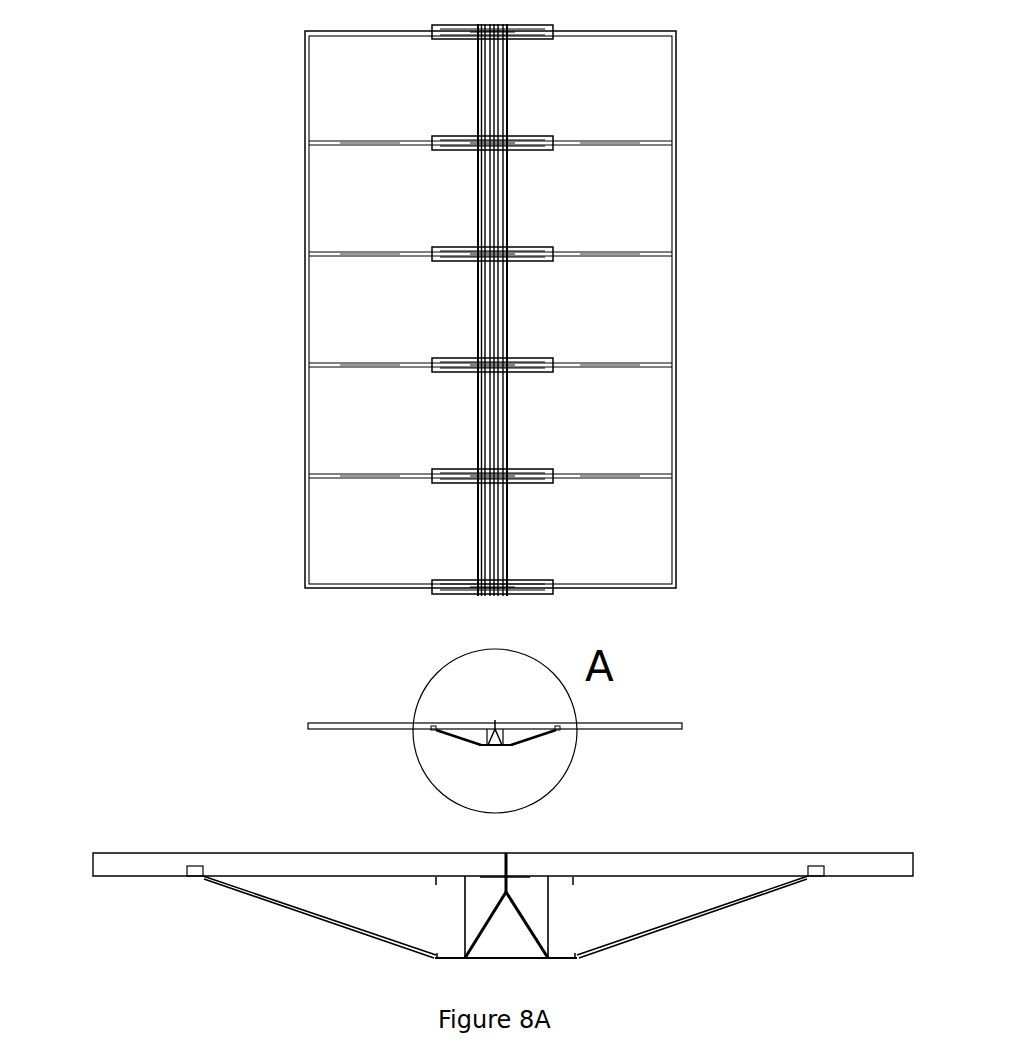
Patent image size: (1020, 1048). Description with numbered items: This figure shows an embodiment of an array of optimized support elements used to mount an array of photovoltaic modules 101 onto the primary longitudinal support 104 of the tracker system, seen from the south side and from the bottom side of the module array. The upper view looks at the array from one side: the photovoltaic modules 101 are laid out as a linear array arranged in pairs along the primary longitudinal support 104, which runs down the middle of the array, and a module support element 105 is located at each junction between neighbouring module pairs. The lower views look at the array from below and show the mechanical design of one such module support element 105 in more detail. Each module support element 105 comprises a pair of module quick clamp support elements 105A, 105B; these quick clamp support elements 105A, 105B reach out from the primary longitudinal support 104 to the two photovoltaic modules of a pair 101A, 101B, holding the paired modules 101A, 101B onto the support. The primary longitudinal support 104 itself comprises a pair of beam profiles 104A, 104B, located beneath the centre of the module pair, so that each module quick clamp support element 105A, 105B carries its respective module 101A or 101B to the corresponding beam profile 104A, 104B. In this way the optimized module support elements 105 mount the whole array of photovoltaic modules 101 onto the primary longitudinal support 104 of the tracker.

The photovoltaic module 101 is at (335, 52).
The primary longitudinal support 104 is at (497, 172).
The module support element 105 is at (448, 148).
The photovoltaic module 101A is at (303, 864).
The photovoltaic module 101B is at (636, 866).
The beam profile 104A is at (457, 916).
The beam profile 104B is at (553, 916).
The module quick clamp support element 105A is at (303, 915).
The module quick clamp support element 105B is at (705, 913).